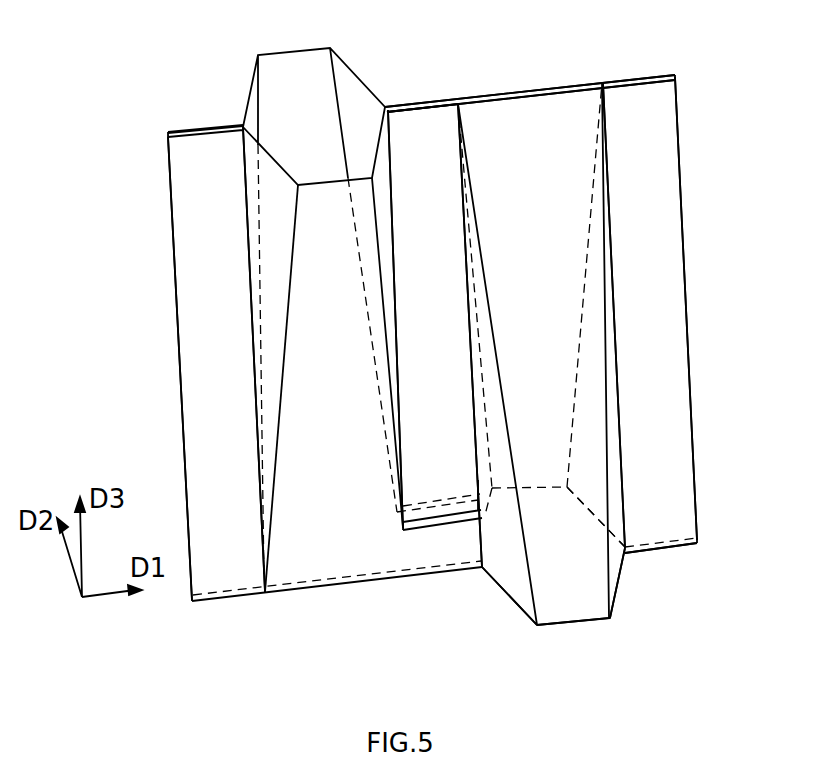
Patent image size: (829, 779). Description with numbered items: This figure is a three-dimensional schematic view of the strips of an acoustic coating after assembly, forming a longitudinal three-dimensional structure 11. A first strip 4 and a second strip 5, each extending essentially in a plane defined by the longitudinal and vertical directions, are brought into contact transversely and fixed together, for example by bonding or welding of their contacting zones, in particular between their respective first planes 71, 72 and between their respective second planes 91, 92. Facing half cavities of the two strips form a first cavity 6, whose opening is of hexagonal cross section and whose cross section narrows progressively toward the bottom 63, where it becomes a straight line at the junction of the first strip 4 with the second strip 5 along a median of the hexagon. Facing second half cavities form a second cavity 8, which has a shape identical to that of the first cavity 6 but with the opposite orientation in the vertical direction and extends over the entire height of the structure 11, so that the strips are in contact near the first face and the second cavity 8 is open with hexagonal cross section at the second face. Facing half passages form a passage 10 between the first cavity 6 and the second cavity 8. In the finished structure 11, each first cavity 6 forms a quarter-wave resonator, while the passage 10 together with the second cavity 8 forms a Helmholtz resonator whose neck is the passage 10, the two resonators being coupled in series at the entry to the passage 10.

The first strip 4 is at (248, 98).
The second strip 5 is at (277, 218).
The first cavity 6 is at (285, 107).
The second cavity 8 is at (572, 582).
The passage 10 is at (437, 545).
The three-dimensional structure 11 is at (715, 284).
The bottom of the first cavity 63 is at (333, 586).
The first plane of the first strip 71 is at (410, 102).
The first plane of the second strip 72 is at (430, 128).
The second plane of the first strip 91 is at (640, 78).
The second plane of the second strip 92 is at (648, 170).